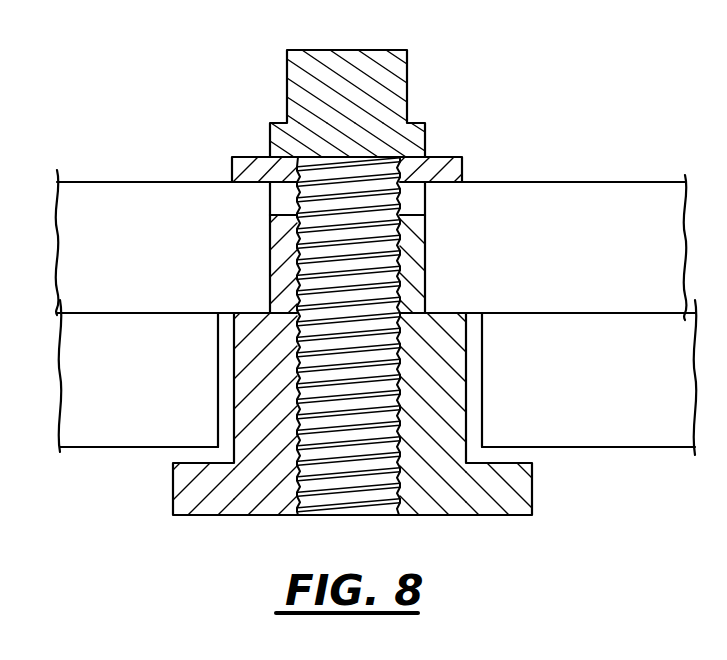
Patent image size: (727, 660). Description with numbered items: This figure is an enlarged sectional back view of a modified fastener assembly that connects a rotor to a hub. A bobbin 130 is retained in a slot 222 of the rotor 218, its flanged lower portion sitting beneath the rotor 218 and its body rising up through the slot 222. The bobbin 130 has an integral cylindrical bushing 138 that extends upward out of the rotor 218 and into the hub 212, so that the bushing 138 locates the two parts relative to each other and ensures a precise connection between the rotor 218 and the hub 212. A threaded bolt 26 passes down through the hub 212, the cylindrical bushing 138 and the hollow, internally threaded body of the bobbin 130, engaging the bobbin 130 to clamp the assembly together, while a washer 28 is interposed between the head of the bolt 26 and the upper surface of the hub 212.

The threaded bolt 26 is at (379, 45).
The washer 28 is at (462, 156).
The hub 212 is at (155, 210).
The cylindrical bushing 138 is at (417, 295).
The rotor 218 is at (93, 423).
The slot 222 is at (222, 388).
The bobbin 130 is at (473, 503).